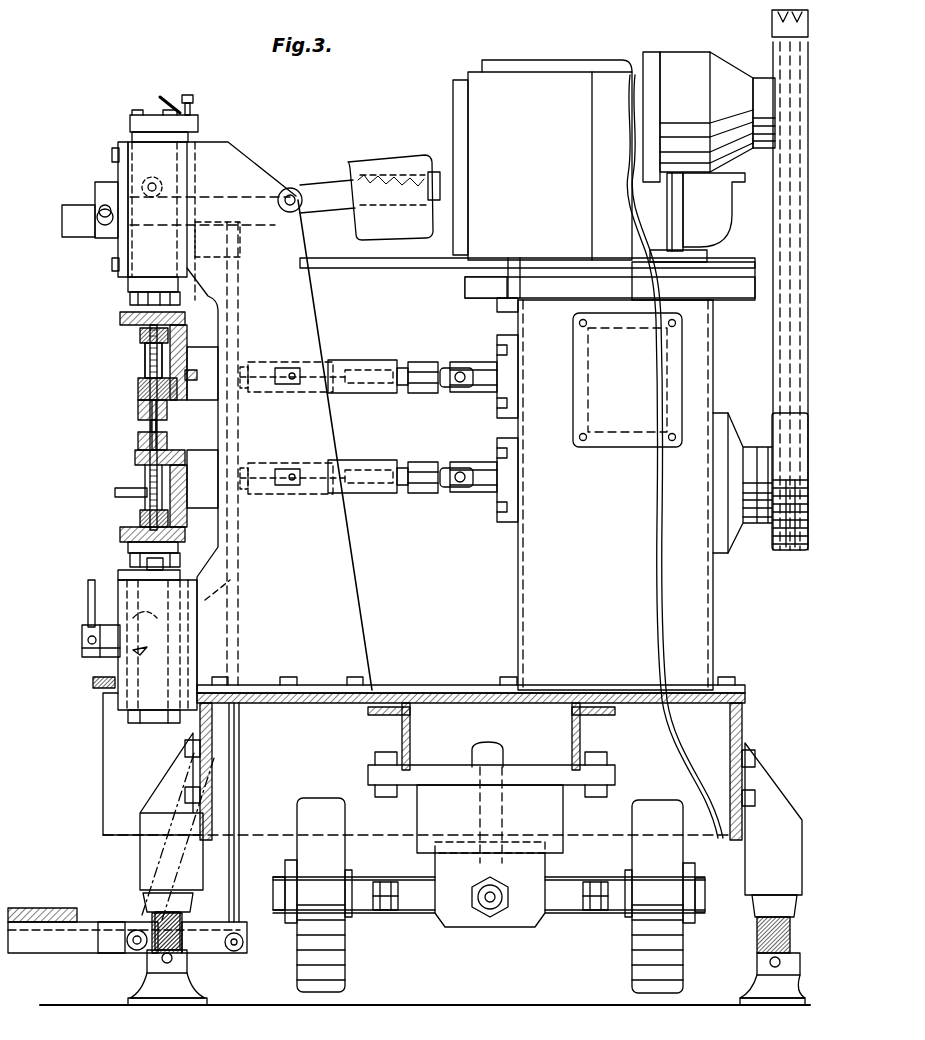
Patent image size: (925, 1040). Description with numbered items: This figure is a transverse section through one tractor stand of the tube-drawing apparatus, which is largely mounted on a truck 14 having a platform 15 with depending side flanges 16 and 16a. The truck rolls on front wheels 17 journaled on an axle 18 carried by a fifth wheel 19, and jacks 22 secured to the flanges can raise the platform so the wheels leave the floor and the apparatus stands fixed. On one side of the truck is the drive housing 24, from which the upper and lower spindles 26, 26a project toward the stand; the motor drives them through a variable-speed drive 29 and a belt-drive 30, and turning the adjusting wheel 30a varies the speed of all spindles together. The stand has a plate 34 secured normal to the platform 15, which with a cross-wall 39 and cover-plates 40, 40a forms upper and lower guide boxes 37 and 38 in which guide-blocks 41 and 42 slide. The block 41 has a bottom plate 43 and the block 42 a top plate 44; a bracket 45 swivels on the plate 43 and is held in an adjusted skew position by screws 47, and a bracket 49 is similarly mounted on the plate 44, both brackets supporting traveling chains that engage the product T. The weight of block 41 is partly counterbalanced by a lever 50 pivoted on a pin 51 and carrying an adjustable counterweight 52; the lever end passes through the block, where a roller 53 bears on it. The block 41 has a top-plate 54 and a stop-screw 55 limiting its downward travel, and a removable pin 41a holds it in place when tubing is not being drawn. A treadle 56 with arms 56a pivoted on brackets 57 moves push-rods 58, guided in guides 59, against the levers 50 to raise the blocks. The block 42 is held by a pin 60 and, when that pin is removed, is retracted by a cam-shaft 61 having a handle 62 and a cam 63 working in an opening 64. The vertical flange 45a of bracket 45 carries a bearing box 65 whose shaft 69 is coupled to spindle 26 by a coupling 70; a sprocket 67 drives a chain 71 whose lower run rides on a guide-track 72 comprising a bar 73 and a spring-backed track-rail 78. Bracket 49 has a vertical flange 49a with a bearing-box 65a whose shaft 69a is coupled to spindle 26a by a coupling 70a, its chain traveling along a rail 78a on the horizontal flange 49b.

The truck 14 is at (197, 770).
The platform 15 is at (262, 705).
The side flange 16 is at (212, 784).
The side flange 16a is at (735, 725).
The front wheels 17 is at (345, 948).
The axle 18 is at (565, 908).
The fifth wheel 19 is at (548, 868).
The jacks 22 is at (165, 855).
The drive housing 24 is at (530, 573).
The upper spindle 26 is at (480, 362).
The lower spindle 26a is at (478, 462).
The variable-speed drive 29 is at (523, 80).
The belt-drive 30 is at (780, 338).
The adjusting wheel 30a is at (197, 628).
The plate 34 is at (318, 306).
The upper guide box 37 is at (135, 245).
The lower guide box 38 is at (150, 593).
The cross-wall 39 is at (202, 140).
The cover-plate 40 is at (118, 170).
The cover-plate 40a is at (118, 604).
The guide-block 41 is at (130, 284).
The removable pin 41a is at (103, 205).
The guide-block 42 is at (150, 714).
The bottom plate 43 is at (118, 320).
The top plate 44 is at (125, 547).
The bracket 45 is at (190, 327).
The vertical flange 45a is at (150, 362).
The screws 47 is at (130, 298).
The bracket 49 is at (125, 532).
The vertical flange 49a is at (178, 520).
The horizontal flange 49b is at (135, 458).
The lever 50 is at (318, 186).
The pin 51 is at (290, 188).
The counterweight 52 is at (385, 165).
The roller 53 is at (152, 171).
The top-plate 54 is at (152, 113).
The stop-screw 55 is at (192, 97).
The treadle 56 is at (40, 910).
The arms 56a is at (108, 955).
The brackets 57 is at (140, 905).
The push-rods 58 is at (242, 748).
The guides 59 is at (242, 247).
The pin 60 is at (108, 680).
The cam-shaft 61 is at (110, 657).
The operating handle 62 is at (88, 589).
The cam 63 is at (148, 629).
The opening 64 is at (150, 659).
The bearing box 65 is at (200, 352).
The bearing-box 65a is at (205, 455).
The sprocket 67 is at (143, 346).
The shaft 69 is at (250, 364).
The shaft 69a is at (250, 466).
The coupling 70 is at (362, 360).
The coupling 70a is at (368, 462).
The chain 71 is at (166, 410).
The guide-track 72 is at (140, 378).
The bar 73 is at (138, 384).
The track-rail 78 is at (138, 405).
The rail 78a is at (140, 440).
The product T is at (148, 426).